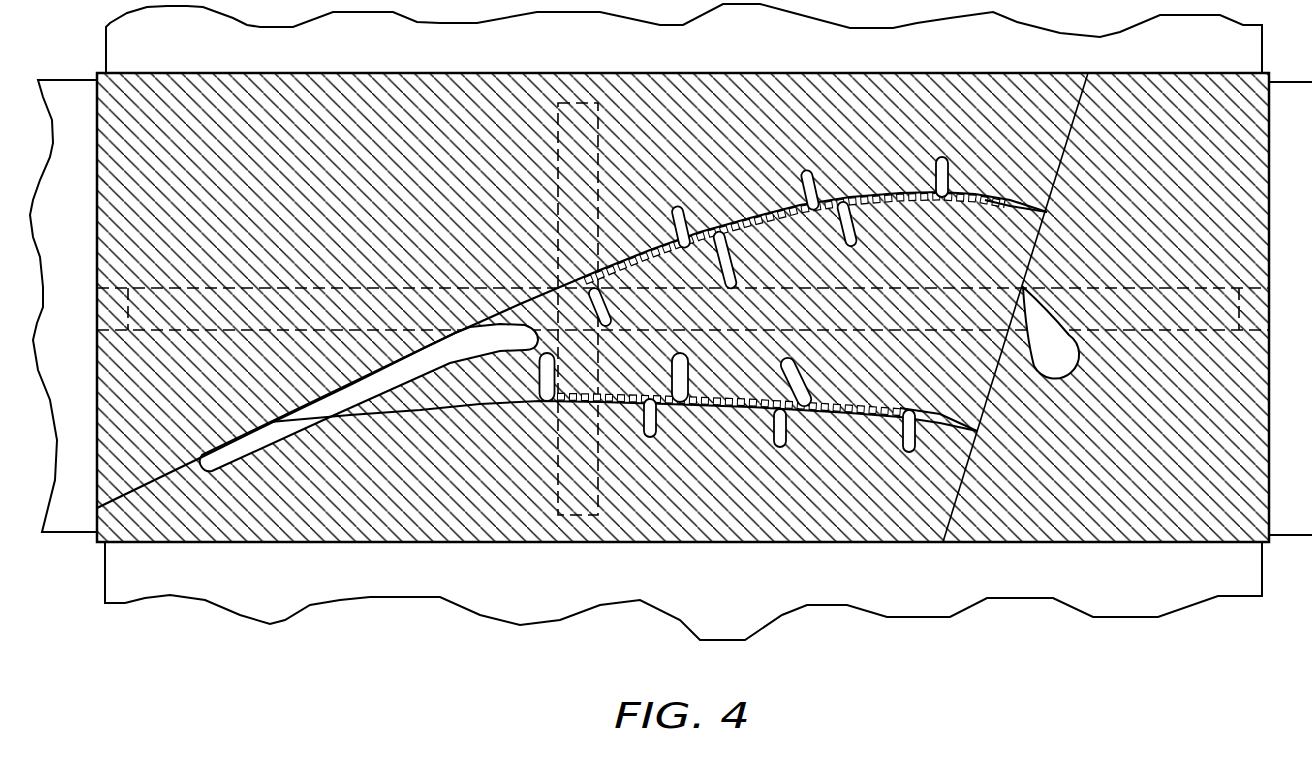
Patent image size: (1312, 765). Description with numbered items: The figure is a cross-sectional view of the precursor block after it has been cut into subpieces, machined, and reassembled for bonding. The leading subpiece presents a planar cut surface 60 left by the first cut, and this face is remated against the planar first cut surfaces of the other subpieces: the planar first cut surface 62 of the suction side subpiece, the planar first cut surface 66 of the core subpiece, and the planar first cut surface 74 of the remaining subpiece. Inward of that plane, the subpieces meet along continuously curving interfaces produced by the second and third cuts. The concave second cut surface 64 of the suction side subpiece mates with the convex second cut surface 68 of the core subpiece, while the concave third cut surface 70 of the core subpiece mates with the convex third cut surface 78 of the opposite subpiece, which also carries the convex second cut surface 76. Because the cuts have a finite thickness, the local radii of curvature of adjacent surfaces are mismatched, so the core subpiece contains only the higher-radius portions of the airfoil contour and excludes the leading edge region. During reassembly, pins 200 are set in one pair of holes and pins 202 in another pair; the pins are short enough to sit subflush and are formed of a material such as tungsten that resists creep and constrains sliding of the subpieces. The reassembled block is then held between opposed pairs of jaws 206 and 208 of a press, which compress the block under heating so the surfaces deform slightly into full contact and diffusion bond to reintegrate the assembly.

The planar cut surface 60 is at (1080, 108).
The planar first cut surface 62 is at (1065, 138).
The continuously curving concave second cut surface 64 is at (1045, 213).
The planar first cut surface 66 is at (988, 390).
The continuously curving convex second cut surface 68 is at (980, 192).
The continuously curving concave third cut surface 70 is at (962, 430).
The planar first cut surface 74 is at (958, 505).
The continuously curving convex second cut surface 76 is at (128, 484).
The continuously curving convex third cut surface 78 is at (975, 425).
The pins 200 is at (137, 282).
The pins 202 is at (600, 517).
The jaws 206 is at (62, 520).
The jaws 208 is at (1032, 593).